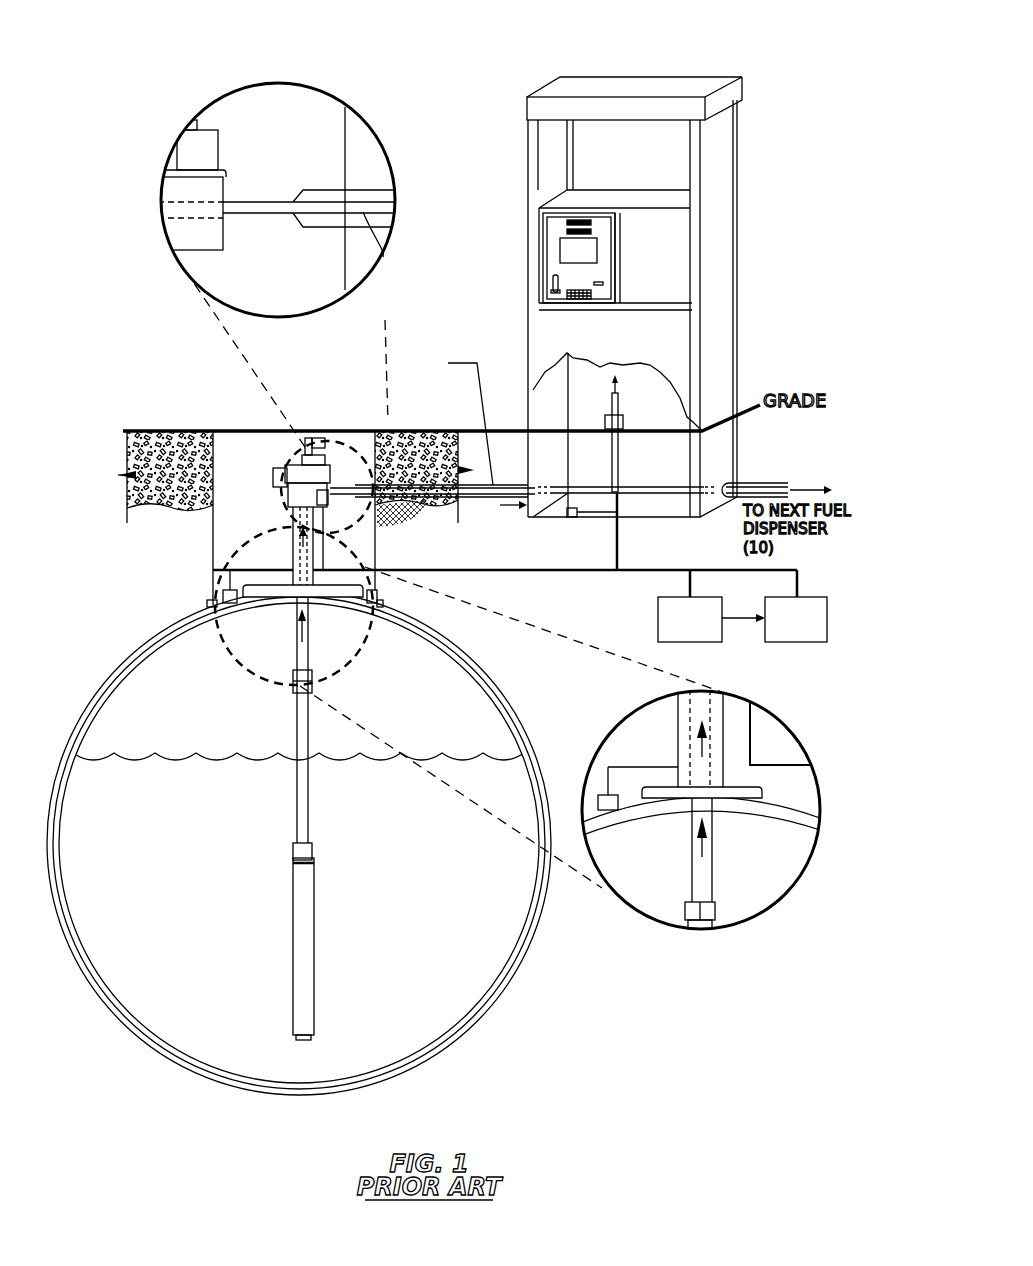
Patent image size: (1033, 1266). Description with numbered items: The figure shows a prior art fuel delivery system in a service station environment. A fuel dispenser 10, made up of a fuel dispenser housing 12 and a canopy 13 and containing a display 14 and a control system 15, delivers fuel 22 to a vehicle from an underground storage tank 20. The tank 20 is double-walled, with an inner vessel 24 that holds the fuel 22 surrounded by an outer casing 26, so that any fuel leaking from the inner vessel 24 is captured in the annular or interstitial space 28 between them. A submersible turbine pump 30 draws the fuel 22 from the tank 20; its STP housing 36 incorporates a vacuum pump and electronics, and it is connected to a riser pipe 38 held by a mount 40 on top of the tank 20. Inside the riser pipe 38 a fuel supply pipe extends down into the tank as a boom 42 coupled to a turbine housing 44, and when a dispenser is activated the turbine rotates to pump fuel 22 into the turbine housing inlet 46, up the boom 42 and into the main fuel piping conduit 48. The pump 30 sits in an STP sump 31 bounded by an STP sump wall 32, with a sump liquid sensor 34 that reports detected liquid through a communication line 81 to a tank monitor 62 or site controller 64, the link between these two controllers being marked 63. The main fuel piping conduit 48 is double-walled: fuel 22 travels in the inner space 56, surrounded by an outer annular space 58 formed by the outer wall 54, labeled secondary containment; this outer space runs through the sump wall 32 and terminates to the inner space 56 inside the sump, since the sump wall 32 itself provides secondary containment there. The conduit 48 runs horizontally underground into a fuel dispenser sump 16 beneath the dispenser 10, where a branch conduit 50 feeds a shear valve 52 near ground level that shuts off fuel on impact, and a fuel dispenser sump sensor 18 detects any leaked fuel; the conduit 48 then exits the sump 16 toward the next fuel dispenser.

The fuel dispenser 10 is at (672, 264).
The fuel dispenser housing 12 is at (737, 155).
The canopy 13 is at (742, 82).
The display 14 is at (615, 240).
The control system 15 is at (646, 271).
The fuel dispenser sump 16 is at (737, 457).
The fuel dispenser sump sensor 18 is at (572, 520).
The underground storage tank 20 is at (304, 843).
The fuel 22 is at (127, 780).
The inner vessel 24 is at (503, 987).
The outer casing 26 is at (483, 1022).
The annular space 28 is at (450, 1045).
The submersible turbine pump 30 is at (270, 494).
The STP sump 31 is at (231, 478).
The STP sump wall 32 is at (212, 543).
The sump liquid sensor 34 is at (224, 592).
The STP housing 36 is at (283, 497).
The riser pipe 38 is at (318, 553).
The mount 40 is at (363, 589).
The boom 42 is at (300, 738).
The turbine housing 44 is at (314, 913).
The turbine housing inlet 46 is at (306, 1039).
The main fuel piping conduit 48 is at (307, 450).
The branch conduit 50 is at (615, 460).
The shear valve 52 is at (618, 417).
The outer wall 54 is at (737, 500).
The inner space 56 is at (383, 257).
The outer annular space 58 is at (377, 223).
The tank monitor 62 is at (690, 619).
The communication link 63 is at (733, 620).
The site controller 64 is at (796, 619).
The communication line 81 is at (593, 571).